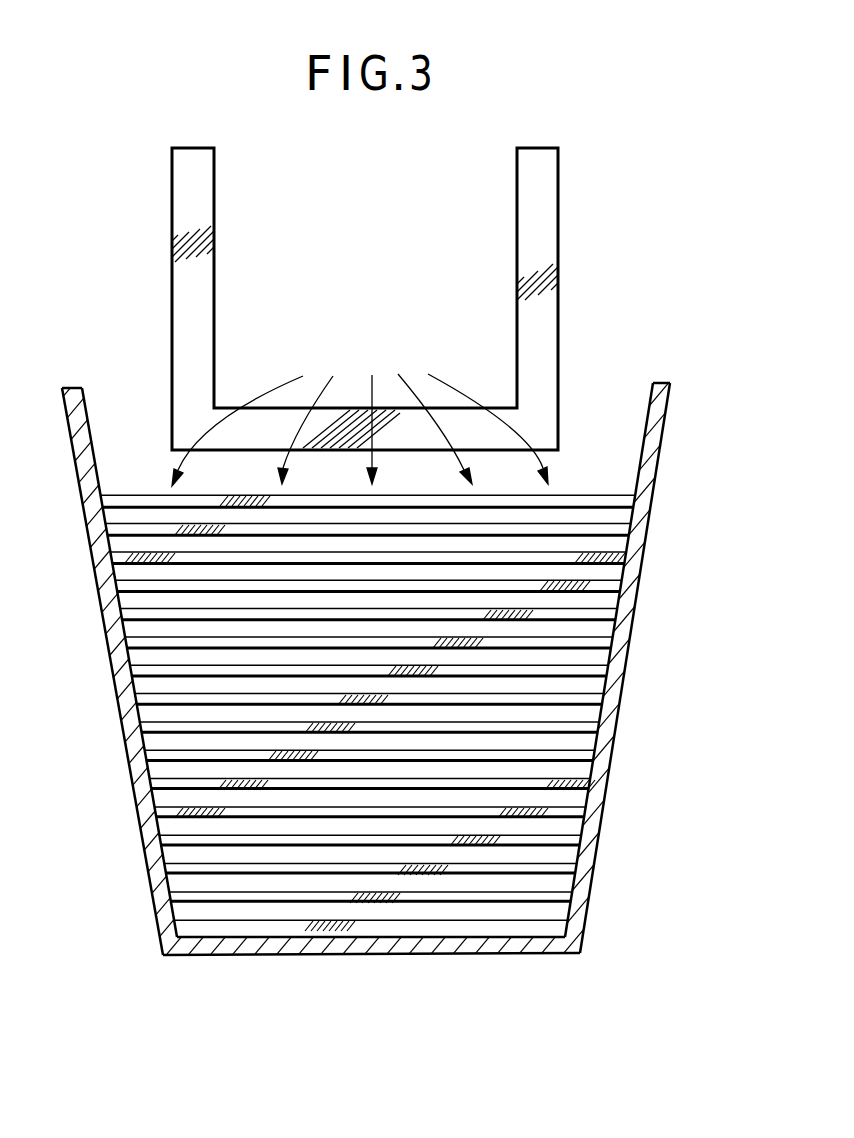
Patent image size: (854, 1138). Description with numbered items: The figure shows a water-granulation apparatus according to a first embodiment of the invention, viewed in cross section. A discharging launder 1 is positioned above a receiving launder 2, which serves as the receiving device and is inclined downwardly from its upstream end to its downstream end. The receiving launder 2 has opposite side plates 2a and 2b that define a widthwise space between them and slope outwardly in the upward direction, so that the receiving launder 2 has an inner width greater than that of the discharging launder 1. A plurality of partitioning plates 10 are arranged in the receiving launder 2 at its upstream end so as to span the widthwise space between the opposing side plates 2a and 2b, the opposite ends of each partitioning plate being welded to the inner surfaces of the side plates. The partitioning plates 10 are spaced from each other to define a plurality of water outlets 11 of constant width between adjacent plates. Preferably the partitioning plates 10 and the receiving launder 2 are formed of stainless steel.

The discharging launder 1 is at (550, 228).
The receiving launder 2 is at (427, 670).
The side plate 2a is at (630, 636).
The side plate 2b is at (153, 770).
The partitioning plate 10 is at (697, 442).
The water outlet 11 is at (617, 512).